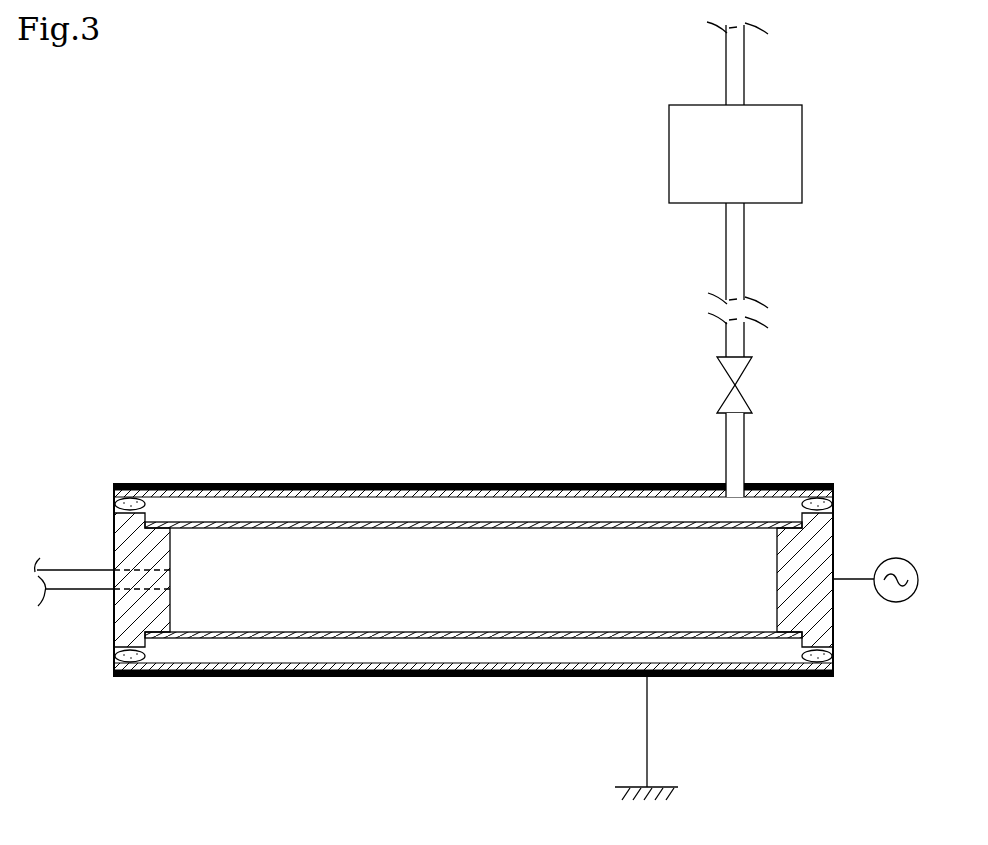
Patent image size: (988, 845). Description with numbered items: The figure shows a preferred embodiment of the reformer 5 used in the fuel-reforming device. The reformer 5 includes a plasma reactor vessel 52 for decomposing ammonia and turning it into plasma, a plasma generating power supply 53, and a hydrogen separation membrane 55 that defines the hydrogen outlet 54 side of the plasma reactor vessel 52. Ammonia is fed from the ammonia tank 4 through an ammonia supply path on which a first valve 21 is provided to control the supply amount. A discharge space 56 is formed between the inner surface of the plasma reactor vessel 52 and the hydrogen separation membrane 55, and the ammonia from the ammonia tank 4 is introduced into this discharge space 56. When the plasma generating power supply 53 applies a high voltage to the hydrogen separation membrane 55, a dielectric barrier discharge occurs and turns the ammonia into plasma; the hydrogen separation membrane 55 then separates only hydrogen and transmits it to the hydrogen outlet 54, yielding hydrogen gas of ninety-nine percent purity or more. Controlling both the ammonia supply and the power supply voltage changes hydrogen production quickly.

The ammonia tank 4 is at (792, 148).
The first valve 21 is at (747, 398).
The reformer 5 is at (486, 525).
The plasma reactor vessel 52 is at (477, 487).
The hydrogen separation membrane 55 is at (360, 522).
The discharge space 56 is at (587, 503).
The hydrogen outlet 54 is at (83, 572).
The plasma generating power supply 53 is at (897, 562).